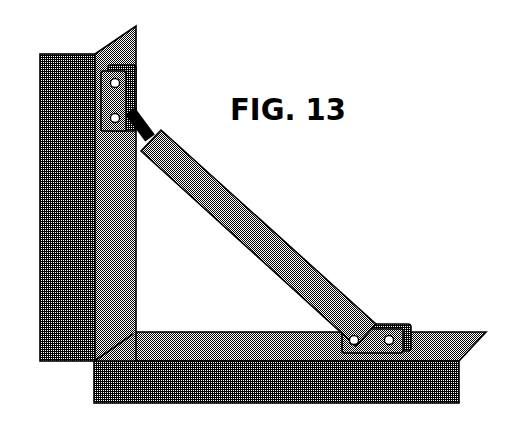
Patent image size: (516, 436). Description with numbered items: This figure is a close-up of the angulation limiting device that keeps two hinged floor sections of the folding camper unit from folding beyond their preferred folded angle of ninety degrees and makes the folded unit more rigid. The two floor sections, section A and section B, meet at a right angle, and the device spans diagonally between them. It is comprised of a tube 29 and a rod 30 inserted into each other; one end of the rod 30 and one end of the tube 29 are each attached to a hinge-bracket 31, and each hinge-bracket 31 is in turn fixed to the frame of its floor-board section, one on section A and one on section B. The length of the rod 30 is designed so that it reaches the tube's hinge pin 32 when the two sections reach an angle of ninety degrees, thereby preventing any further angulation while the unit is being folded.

The tube 29 is at (285, 247).
The rod 30 is at (140, 110).
The hinge-bracket 31 is at (107, 91).
The hinge pin 32 is at (345, 332).
The section A is at (88, 193).
The section B is at (290, 367).